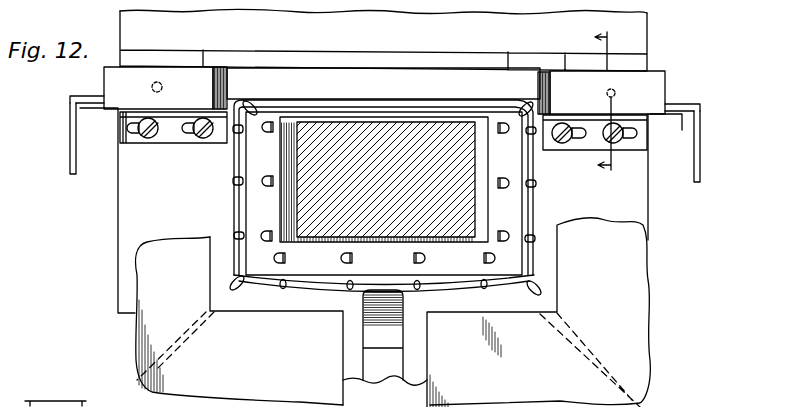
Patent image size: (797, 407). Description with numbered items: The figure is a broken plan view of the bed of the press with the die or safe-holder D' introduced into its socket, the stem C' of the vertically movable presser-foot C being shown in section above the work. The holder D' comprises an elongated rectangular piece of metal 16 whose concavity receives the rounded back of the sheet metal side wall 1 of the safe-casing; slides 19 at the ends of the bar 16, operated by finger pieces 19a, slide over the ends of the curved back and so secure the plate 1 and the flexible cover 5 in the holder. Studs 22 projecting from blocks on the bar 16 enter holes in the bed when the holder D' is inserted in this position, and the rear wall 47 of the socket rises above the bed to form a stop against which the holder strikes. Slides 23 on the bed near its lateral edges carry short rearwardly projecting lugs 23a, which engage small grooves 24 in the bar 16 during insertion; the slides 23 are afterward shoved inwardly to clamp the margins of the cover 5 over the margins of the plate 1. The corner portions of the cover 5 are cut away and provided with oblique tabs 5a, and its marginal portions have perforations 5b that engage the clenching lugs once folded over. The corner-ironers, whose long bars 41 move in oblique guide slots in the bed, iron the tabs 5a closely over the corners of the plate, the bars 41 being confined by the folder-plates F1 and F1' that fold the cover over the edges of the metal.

The side wall 1 is at (312, 318).
The flexible cover 5 is at (347, 93).
The oblique tab 5a is at (238, 280).
The perforation 5b is at (355, 282).
The elongated piece of metal 16 is at (616, 107).
The slide 19 is at (70, 98).
The finger piece 19a is at (70, 152).
The stud 22 is at (160, 82).
The slide 23 is at (173, 137).
The lug 23a is at (213, 98).
The groove 24 is at (228, 92).
The bar 41 is at (588, 344).
The rear wall 47 is at (250, 53).
The presser-foot C is at (326, 182).
The stem C' is at (444, 239).
The safe-holder D' is at (383, 45).
The lower body left F1 is at (239, 321).
The lower body right F1' is at (538, 312).